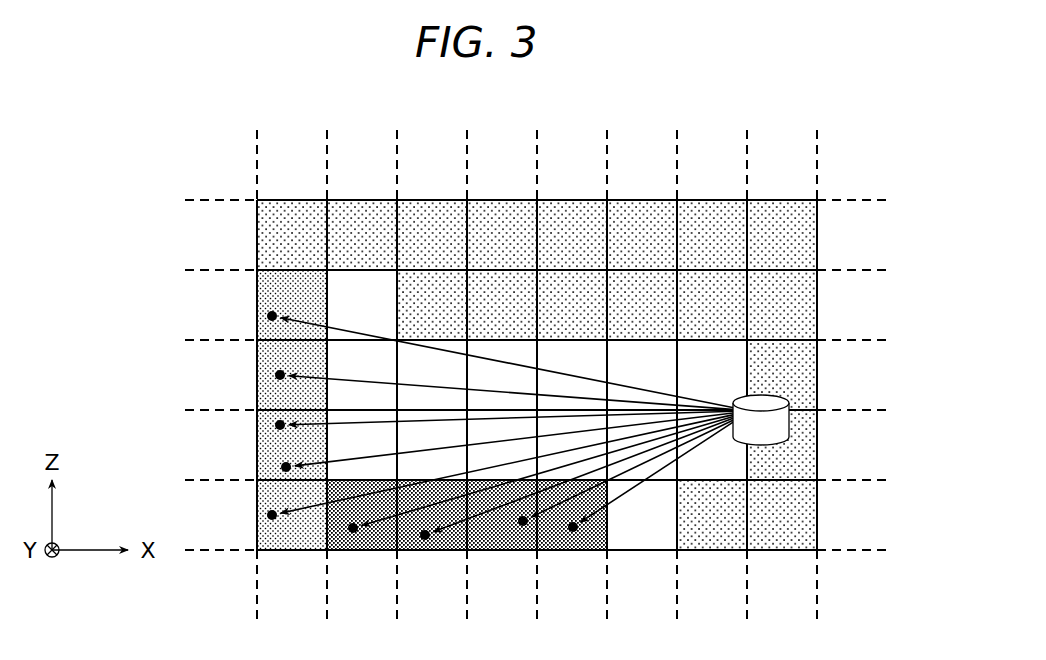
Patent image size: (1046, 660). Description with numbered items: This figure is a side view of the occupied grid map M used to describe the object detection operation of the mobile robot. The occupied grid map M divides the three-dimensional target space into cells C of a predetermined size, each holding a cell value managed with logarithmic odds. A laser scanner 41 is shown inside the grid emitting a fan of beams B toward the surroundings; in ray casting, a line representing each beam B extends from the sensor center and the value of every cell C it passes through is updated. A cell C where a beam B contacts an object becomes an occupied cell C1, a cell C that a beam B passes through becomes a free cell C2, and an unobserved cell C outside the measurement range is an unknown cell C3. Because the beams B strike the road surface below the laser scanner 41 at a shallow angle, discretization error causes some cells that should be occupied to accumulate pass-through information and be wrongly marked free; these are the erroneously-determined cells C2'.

The cell C is at (773, 215).
The occupied cell C1 is at (273, 297).
The free cell C2 is at (502, 378).
The erroneously-determined cell C2' is at (467, 553).
The unknown cell C3 is at (430, 215).
The beam B is at (563, 377).
The occupied grid map M is at (852, 166).
The laser scanner 41 is at (790, 424).